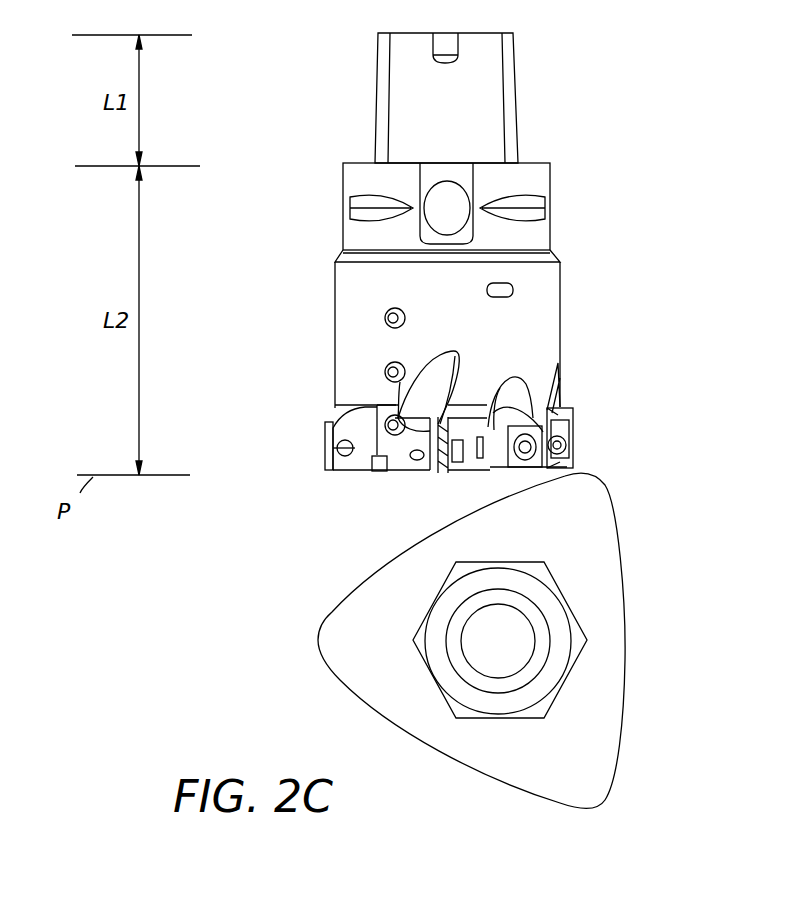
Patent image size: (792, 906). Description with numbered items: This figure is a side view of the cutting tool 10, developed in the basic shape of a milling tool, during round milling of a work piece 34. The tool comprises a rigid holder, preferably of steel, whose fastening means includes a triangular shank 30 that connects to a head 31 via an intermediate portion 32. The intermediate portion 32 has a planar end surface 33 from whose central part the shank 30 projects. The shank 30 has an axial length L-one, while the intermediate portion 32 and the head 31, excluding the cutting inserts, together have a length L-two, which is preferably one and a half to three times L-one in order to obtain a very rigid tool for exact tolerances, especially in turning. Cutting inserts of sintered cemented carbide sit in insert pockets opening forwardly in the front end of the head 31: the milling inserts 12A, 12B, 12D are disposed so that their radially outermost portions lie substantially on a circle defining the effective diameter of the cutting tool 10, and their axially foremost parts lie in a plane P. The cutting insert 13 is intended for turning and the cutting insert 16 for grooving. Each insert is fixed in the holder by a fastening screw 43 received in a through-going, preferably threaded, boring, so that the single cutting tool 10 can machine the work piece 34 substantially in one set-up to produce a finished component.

The cutting tool 10 is at (524, 278).
The shank 30 is at (483, 112).
The head 31 is at (547, 340).
The intermediate portion 32 is at (538, 182).
The planar end surface 33 is at (532, 162).
The work piece 34 is at (650, 549).
The milling insert 12A is at (452, 472).
The milling insert 12B is at (572, 457).
The milling insert 12D is at (323, 467).
The cutting insert 13 is at (535, 462).
The cutting insert 16 is at (377, 472).
The fastening screw 43 is at (550, 435).